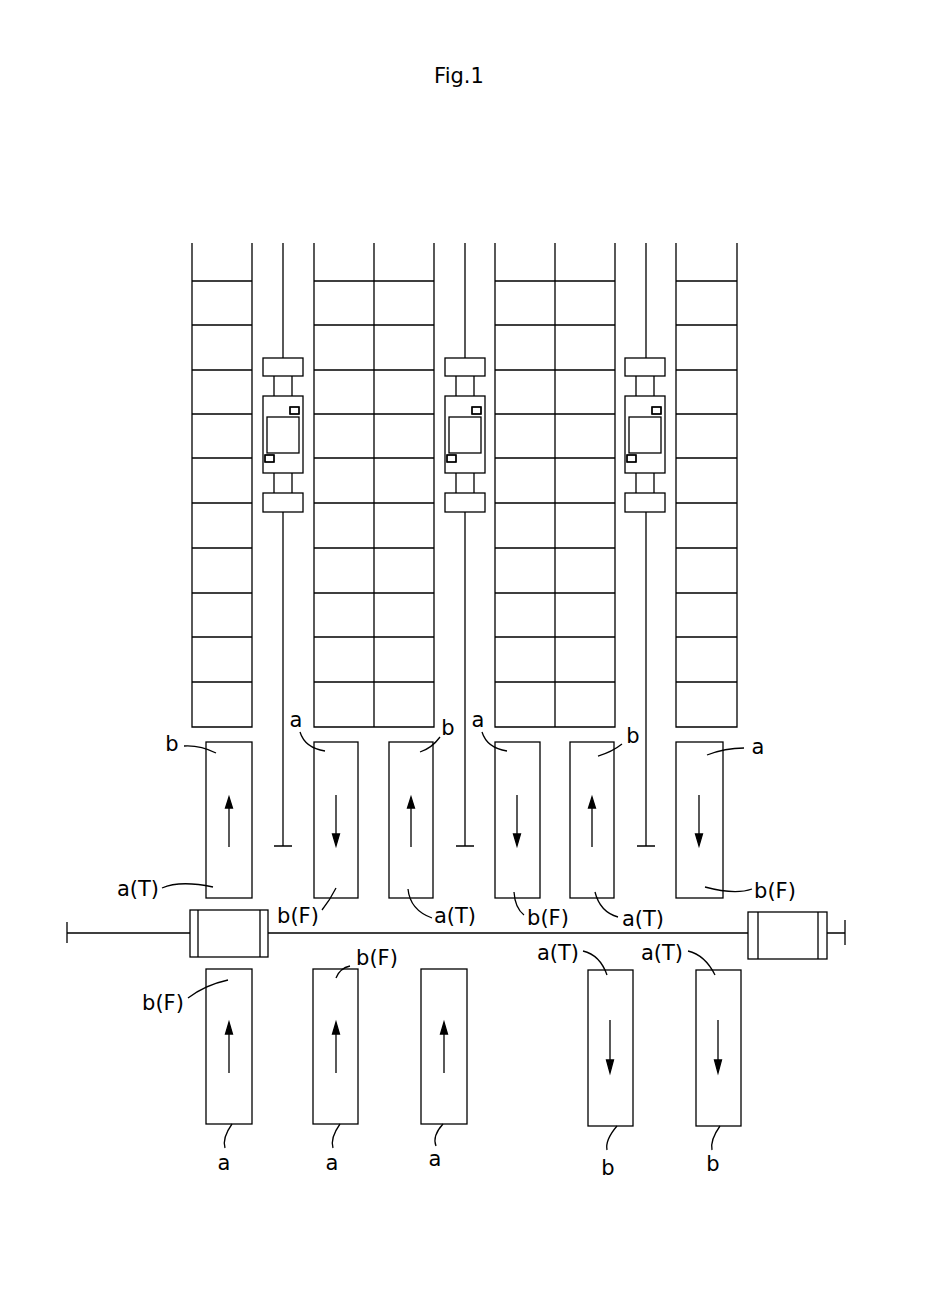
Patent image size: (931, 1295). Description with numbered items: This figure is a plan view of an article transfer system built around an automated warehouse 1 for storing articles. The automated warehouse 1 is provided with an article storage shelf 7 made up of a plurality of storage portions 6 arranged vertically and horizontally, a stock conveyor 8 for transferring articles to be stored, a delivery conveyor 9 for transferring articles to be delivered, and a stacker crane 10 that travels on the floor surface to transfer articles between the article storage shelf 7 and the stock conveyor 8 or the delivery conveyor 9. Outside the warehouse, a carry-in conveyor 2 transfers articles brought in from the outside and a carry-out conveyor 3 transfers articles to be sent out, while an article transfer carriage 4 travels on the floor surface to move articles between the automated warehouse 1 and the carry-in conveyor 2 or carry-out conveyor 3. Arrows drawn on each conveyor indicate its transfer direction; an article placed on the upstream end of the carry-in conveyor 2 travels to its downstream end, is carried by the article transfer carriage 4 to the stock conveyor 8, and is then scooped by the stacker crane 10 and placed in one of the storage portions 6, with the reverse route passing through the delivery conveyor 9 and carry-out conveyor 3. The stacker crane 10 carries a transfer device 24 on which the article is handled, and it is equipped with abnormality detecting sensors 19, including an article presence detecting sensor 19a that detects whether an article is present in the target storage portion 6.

The automated warehouse 1 is at (289, 206).
The carry-in conveyor 2 is at (213, 1047).
The carry-out conveyor 3 is at (596, 1047).
The article transfer carriage 4 is at (207, 938).
The storage portion 6 is at (320, 332).
The article storage shelf 7 is at (353, 250).
The stock conveyor 8 is at (216, 832).
The delivery conveyor 9 is at (319, 853).
The stacker crane 10 is at (297, 463).
The abnormality detecting sensor 19 is at (463, 467).
The article presence detecting sensor 19a is at (268, 458).
The transfer device 24 is at (285, 435).